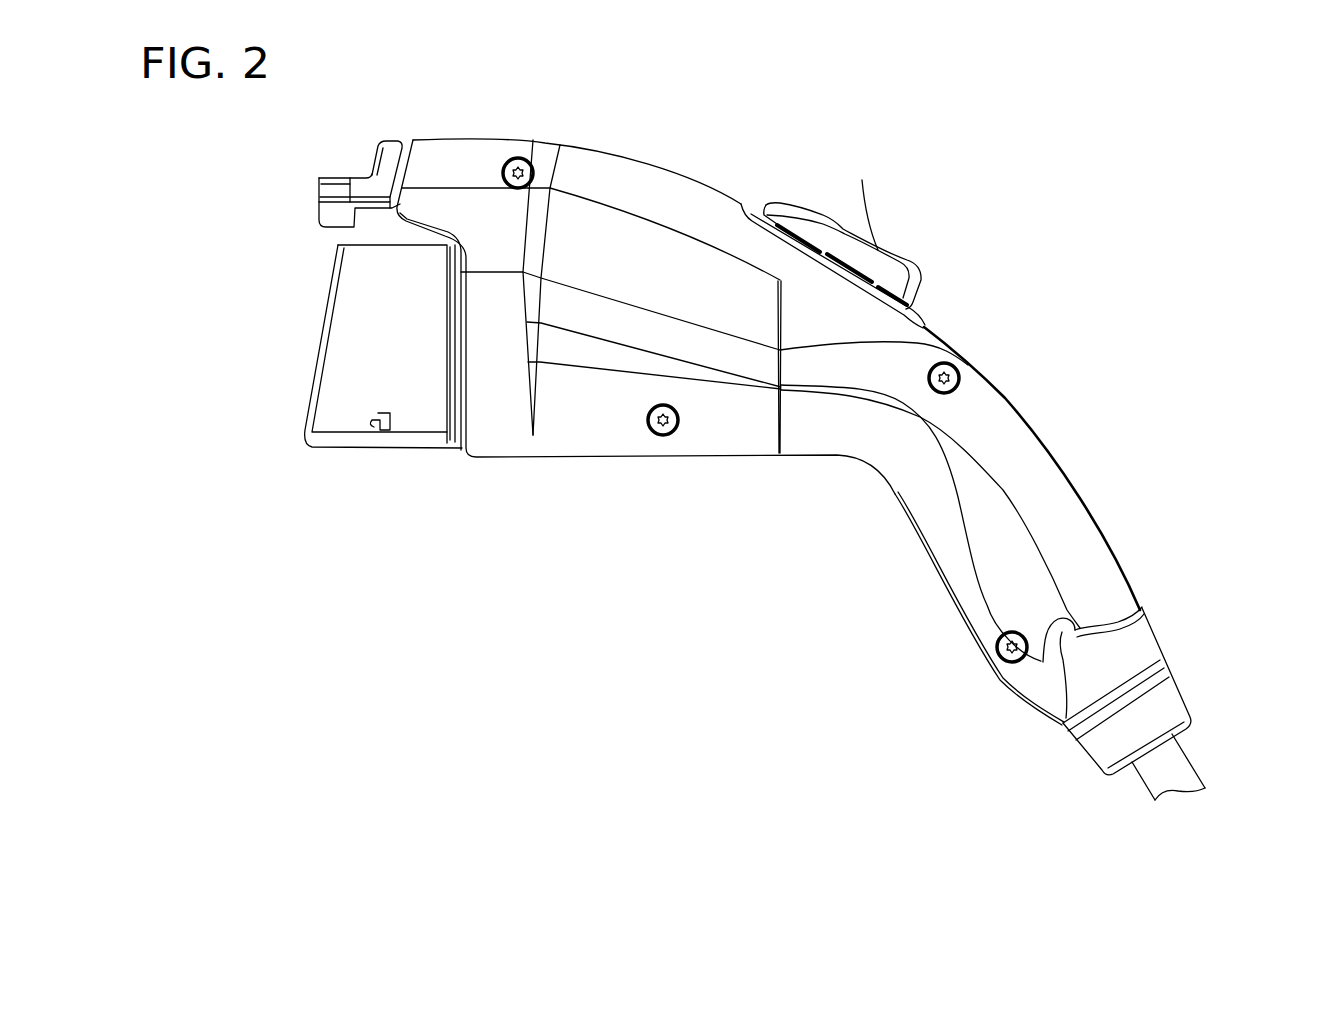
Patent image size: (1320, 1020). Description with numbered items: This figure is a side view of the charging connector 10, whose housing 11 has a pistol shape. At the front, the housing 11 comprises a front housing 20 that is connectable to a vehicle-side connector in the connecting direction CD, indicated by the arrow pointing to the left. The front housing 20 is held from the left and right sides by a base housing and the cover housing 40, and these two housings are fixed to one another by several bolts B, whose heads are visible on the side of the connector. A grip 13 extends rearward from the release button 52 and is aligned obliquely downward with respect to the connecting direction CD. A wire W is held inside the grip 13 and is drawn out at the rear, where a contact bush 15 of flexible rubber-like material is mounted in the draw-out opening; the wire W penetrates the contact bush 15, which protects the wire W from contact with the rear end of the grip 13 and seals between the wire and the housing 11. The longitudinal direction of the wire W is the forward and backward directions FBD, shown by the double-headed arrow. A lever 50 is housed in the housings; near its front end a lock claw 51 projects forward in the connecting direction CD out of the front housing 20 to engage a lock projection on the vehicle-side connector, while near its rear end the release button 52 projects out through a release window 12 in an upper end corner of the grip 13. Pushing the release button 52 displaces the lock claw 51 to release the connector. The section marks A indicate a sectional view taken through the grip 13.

The charging connector 10 is at (728, 149).
The housing 11 is at (672, 162).
The release window 12 is at (871, 270).
The grip 13 is at (962, 637).
The contact bush 15 is at (1170, 698).
The front housing 20 is at (351, 464).
The cover housing 40 is at (620, 171).
The lever 50 is at (804, 189).
The lock claw 51 is at (336, 176).
The release button 52 is at (862, 180).
The bolts B is at (518, 157).
The wire W is at (1180, 772).
The section line A is at (1117, 515).
The connecting direction CD is at (240, 331).
The forward and backward directions FBD is at (1198, 832).